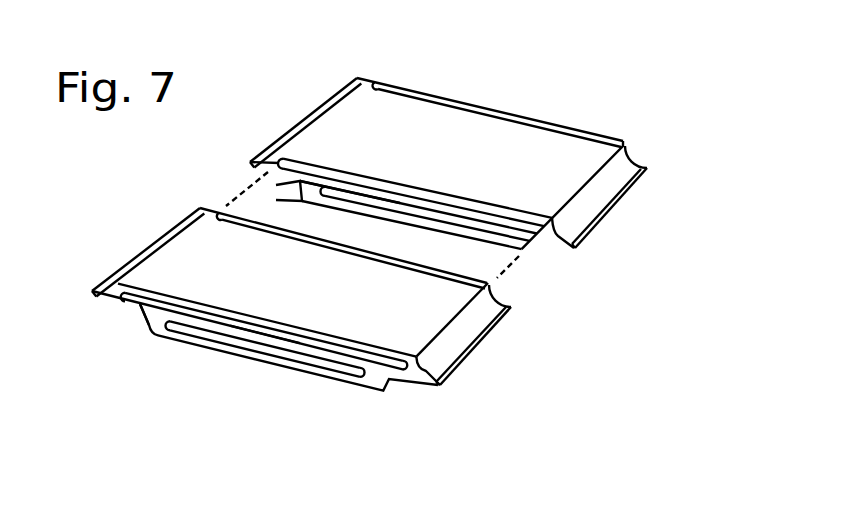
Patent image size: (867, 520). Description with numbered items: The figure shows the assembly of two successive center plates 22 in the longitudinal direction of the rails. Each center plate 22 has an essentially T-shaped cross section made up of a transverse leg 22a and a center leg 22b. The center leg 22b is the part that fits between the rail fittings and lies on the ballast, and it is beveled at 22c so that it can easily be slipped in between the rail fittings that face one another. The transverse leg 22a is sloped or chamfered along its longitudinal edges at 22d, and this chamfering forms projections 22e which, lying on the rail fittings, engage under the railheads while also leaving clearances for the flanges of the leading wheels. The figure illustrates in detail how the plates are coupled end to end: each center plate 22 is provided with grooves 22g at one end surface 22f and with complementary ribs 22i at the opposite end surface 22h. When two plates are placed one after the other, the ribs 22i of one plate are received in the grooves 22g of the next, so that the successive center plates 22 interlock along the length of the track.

The center plate 22 is at (318, 122).
The transverse leg 22a is at (546, 221).
The center leg 22b is at (418, 225).
The bevel 22c is at (266, 176).
The chamfered longitudinal edge 22d is at (272, 143).
The projection 22e is at (250, 163).
The end surface 22f is at (163, 307).
The groove 22g is at (399, 195).
The opposite end surface 22h is at (365, 78).
The rib 22i is at (483, 105).